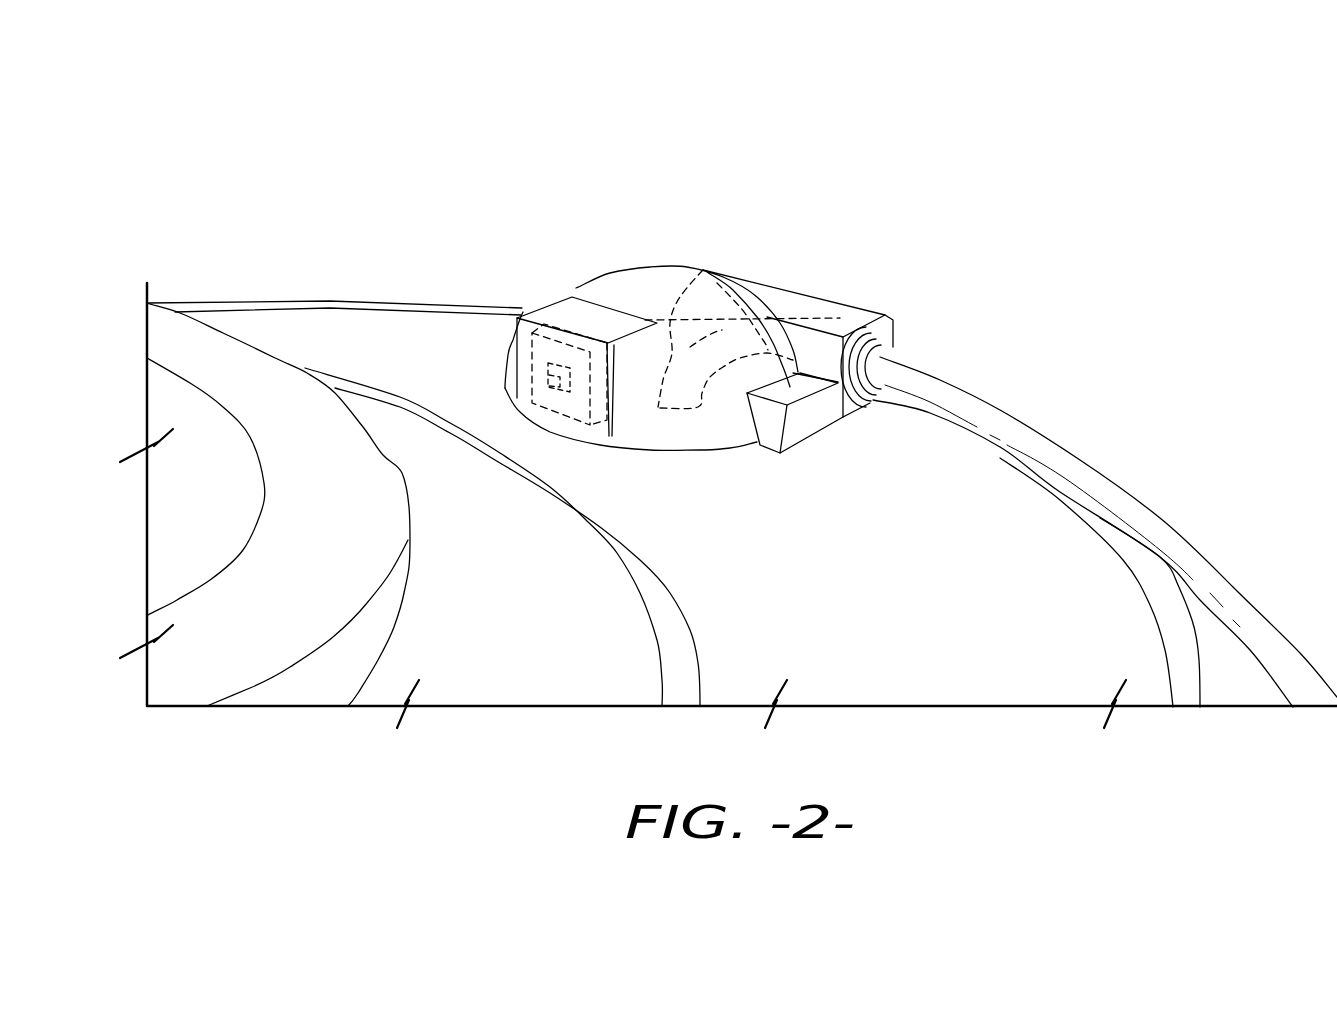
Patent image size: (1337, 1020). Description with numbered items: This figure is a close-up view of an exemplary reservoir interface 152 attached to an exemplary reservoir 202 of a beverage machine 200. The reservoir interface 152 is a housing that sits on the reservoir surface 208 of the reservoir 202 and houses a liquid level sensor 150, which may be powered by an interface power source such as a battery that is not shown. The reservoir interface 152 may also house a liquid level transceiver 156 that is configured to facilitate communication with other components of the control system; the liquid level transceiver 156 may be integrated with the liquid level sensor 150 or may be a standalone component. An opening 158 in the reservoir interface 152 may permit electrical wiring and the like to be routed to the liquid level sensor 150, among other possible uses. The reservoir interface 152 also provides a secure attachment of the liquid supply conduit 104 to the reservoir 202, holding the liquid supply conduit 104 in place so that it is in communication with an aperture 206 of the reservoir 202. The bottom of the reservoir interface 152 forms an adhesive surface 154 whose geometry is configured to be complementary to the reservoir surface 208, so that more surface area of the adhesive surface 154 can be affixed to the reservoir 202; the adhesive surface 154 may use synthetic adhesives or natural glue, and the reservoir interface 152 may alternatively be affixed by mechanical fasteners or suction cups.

The beverage machine 200 is at (334, 192).
The reservoir 202 is at (350, 300).
The reservoir surface 208 is at (886, 604).
The reservoir interface 152 is at (627, 238).
The adhesive surface 154 is at (657, 425).
The liquid level sensor 150 is at (548, 378).
The liquid level transceiver 156 is at (530, 368).
The aperture 206 is at (700, 276).
The opening 158 is at (800, 413).
The liquid supply conduit 104 is at (1043, 433).